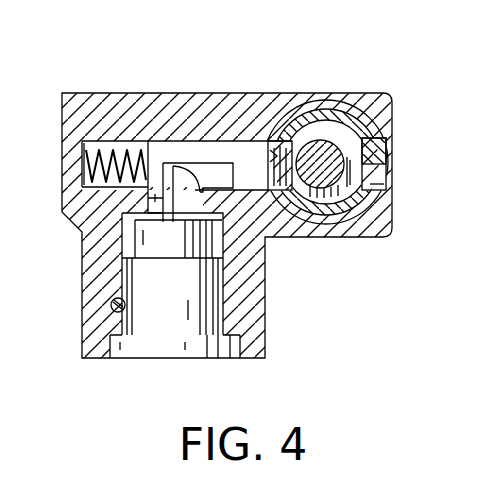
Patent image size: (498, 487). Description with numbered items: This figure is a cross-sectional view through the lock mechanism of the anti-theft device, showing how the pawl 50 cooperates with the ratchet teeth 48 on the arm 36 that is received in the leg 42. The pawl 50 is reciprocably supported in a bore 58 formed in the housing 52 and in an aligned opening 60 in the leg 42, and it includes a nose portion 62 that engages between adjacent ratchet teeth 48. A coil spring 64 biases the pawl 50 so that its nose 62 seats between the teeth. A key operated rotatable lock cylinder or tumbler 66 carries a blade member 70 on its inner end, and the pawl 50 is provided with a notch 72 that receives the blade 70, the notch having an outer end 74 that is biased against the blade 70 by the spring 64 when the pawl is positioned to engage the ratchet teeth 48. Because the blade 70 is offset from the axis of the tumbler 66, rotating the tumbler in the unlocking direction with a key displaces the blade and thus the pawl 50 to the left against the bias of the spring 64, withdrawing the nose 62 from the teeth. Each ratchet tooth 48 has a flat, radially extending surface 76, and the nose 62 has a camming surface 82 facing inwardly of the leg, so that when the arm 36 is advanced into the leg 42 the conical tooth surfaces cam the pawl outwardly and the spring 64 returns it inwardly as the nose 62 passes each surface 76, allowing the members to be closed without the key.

The arm 36 is at (363, 152).
The leg 42 is at (339, 117).
The ratchet teeth 48 is at (394, 100).
The pawl 50 is at (247, 145).
The housing 52 is at (82, 274).
The bore 58 is at (125, 93).
The opening 60 is at (289, 208).
The nose portion 62 is at (287, 141).
The coil spring 64 is at (95, 143).
The lock cylinder or tumbler 66 is at (158, 358).
The blade member 70 is at (133, 196).
The notch 72 is at (184, 196).
The outer end 74 is at (185, 170).
The flat radially extending surface 76 is at (353, 176).
The camming surface 82 is at (340, 233).